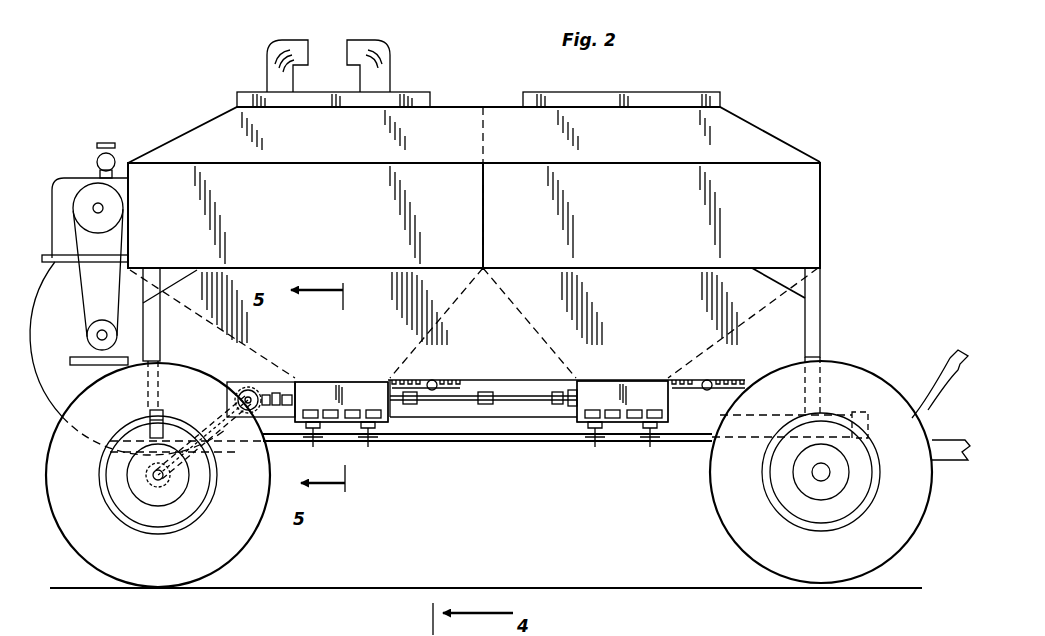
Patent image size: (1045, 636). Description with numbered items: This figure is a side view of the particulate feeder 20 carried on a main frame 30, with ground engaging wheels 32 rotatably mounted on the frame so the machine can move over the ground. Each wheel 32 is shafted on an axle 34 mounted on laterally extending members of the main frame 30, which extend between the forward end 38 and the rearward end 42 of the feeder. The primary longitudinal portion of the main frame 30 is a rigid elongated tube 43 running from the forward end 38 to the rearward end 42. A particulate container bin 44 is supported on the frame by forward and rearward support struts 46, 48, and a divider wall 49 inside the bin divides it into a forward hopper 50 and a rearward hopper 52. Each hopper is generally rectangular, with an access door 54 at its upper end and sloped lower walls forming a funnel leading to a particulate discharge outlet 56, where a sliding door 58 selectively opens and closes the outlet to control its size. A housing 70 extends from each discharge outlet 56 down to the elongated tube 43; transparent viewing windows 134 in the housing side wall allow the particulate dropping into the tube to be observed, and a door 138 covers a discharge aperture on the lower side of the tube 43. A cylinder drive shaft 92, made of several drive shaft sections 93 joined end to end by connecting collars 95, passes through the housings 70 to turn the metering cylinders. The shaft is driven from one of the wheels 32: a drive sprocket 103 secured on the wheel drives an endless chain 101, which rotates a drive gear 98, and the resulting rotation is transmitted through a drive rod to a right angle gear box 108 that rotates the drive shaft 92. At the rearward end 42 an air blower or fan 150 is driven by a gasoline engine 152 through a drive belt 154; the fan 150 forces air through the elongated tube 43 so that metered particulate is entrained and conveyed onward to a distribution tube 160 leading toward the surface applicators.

The particulate feeder 20 is at (828, 144).
The main frame 30 is at (469, 446).
The ground engaging wheels 32 is at (236, 545).
The axle 34 is at (156, 480).
The forward end 38 is at (820, 218).
The rearward end 42 is at (128, 214).
The elongated tube 43 is at (429, 442).
The particulate container bin 44 is at (468, 102).
The forward support strut 46 is at (822, 298).
The rearward support strut 48 is at (160, 334).
The divider wall 49 is at (485, 214).
The forward hopper 50 is at (652, 216).
The rearward hopper 52 is at (342, 216).
The access door 54 is at (238, 99).
The particulate discharge outlet 56 is at (353, 381).
The sliding door 58 is at (410, 379).
The housing 70 is at (331, 380).
The cylinder drive shaft 92 is at (506, 390).
The drive shaft sections 93 is at (450, 418).
The connecting collars 95 is at (288, 420).
The drive gear 98 is at (212, 453).
The endless chain 101 is at (102, 449).
The drive sprocket 103 is at (206, 480).
The right angle gear box 108 is at (245, 384).
The transparent viewing windows 134 is at (634, 419).
The door 138 is at (352, 440).
The air blower or fan 150 is at (77, 341).
The gasoline engine 152 is at (62, 178).
The drive belt 154 is at (122, 238).
The distribution tube 160 is at (942, 362).